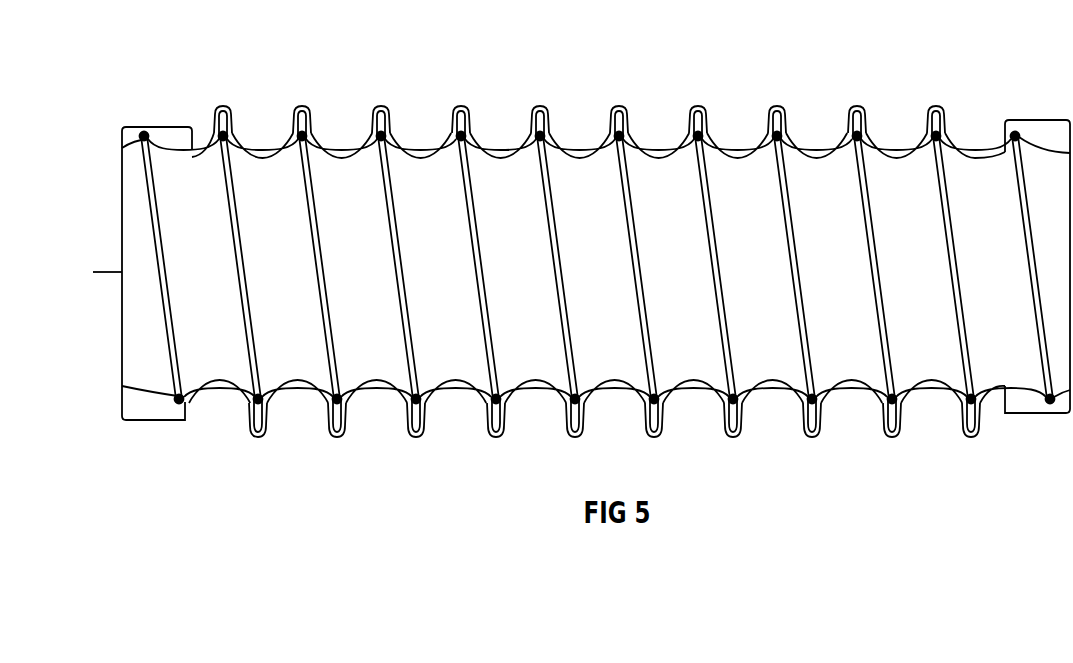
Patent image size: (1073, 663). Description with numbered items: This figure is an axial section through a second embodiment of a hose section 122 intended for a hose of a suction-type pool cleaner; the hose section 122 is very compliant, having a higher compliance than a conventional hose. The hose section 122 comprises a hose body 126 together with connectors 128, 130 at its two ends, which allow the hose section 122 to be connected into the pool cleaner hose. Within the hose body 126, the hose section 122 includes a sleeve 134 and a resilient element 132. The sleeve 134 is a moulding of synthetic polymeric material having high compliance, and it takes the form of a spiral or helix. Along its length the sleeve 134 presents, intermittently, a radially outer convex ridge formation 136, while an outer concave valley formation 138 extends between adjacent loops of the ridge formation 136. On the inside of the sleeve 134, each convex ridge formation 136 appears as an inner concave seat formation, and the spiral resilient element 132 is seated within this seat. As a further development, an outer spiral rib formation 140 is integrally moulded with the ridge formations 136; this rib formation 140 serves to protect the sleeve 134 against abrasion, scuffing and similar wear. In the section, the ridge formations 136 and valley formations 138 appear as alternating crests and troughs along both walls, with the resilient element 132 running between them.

The hose section 122 is at (708, 70).
The hose body 126 is at (808, 91).
The connector 128 is at (1042, 130).
The connector 130 is at (168, 142).
The resilient element 132 is at (313, 190).
The sleeve 134 is at (581, 119).
The convex ridge formation 136 is at (239, 119).
The concave valley formation 138 is at (425, 119).
The outer spiral rib formation 140 is at (857, 108).